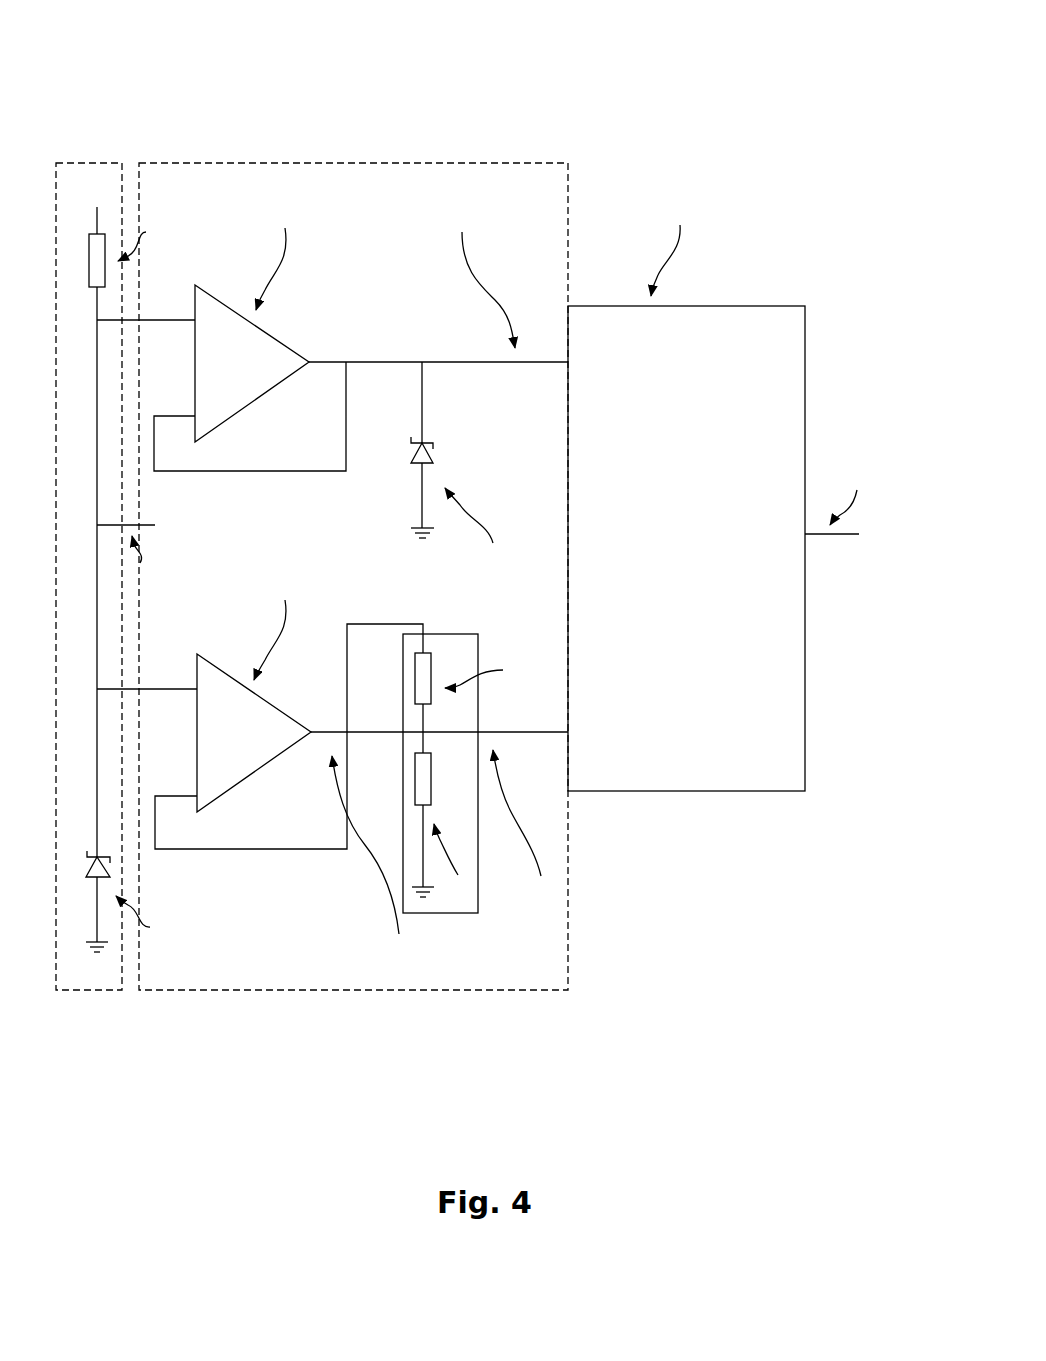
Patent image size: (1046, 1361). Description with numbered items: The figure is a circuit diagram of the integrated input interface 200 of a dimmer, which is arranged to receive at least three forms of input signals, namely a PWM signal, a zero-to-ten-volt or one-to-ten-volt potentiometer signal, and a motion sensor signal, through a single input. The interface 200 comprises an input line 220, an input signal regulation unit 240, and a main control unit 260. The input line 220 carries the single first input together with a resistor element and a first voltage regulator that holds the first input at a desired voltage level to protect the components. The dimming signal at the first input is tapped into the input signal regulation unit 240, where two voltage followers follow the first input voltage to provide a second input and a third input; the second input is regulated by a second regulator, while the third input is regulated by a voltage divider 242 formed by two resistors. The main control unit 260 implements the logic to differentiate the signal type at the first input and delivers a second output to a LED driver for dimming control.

The integrated input interface 200 is at (473, 505).
The input line 220 is at (89, 163).
The input signal regulation unit 240 is at (370, 163).
The voltage divider 242 is at (494, 905).
The main control unit 260 is at (729, 493).